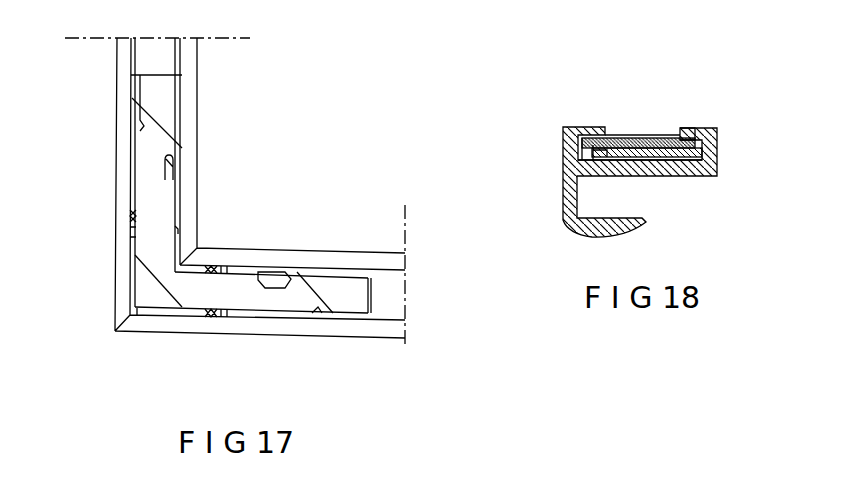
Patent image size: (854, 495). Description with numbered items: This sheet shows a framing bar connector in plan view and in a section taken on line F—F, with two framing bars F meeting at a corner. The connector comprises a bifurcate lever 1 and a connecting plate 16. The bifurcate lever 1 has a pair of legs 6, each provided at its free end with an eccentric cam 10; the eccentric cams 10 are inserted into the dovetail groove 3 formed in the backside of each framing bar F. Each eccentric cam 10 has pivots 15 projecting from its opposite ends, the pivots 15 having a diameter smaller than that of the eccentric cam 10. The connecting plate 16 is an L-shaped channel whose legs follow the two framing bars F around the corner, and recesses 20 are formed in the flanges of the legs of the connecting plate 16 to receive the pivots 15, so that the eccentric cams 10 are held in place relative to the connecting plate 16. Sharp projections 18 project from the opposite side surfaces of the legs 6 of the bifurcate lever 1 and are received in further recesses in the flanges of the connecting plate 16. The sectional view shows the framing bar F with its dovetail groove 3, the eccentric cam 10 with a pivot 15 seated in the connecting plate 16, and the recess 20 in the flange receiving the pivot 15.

In FIG. 17, the bifurcate lever 1 is at (197, 300).
In FIG. 18, the dovetail groove 3 is at (702, 149).
In FIG. 17, the legs 6 is at (263, 302).
In FIG. 17, the eccentric cam 10 is at (160, 133).
In FIG. 18, the eccentric cam 10 is at (642, 138).
In FIG. 17, the pivots 15 is at (137, 108).
In FIG. 18, the pivots 15 is at (580, 140).
In FIG. 18, the connecting plate 16 is at (661, 177).
In FIG. 17, the sharp projections 18 is at (131, 218).
In FIG. 18, the recesses 20 is at (690, 128).
In FIG. 17, the framing bar F is at (108, 50).
In FIG. 18, the framing bar F is at (562, 191).